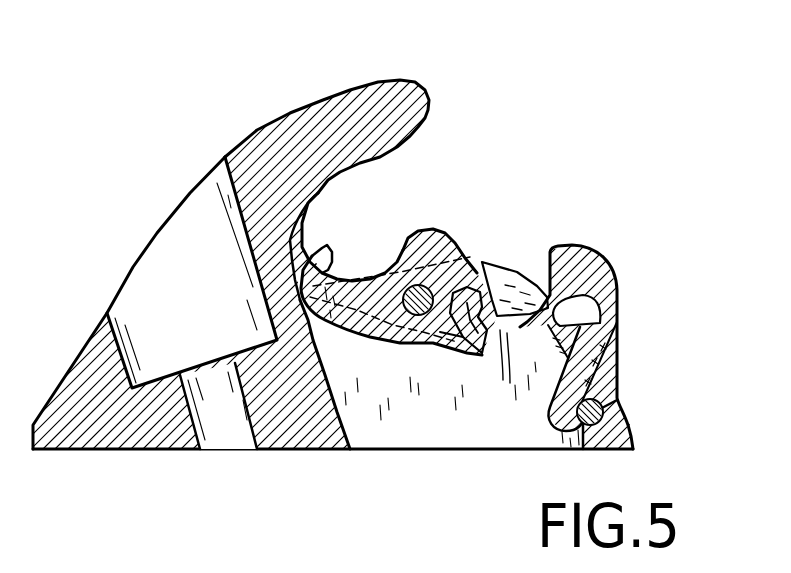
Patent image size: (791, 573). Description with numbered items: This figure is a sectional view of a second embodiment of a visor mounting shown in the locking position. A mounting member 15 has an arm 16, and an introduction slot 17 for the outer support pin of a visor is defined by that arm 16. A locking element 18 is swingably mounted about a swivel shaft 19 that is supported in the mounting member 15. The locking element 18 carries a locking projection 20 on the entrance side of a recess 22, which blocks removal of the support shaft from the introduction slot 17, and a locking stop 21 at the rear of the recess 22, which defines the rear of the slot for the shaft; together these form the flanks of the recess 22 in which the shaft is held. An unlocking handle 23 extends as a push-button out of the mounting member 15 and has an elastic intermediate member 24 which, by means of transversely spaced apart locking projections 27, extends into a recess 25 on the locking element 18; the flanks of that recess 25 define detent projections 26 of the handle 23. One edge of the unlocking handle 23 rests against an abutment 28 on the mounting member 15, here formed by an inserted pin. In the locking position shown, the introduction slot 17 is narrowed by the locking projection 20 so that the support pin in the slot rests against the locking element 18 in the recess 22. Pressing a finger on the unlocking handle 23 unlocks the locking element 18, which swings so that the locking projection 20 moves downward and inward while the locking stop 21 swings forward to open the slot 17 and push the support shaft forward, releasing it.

The mounting member 15 is at (329, 437).
The arm 16 is at (367, 107).
The introduction slot 17 is at (373, 200).
The locking element 18 is at (357, 338).
The swivel shaft 19 is at (447, 258).
The locking projection 20 is at (438, 229).
The locking stop 21 is at (300, 243).
The recess 22 is at (258, 449).
The unlocking handle 23 is at (582, 262).
The elastic intermediate member 24 is at (610, 318).
The recess 25 is at (450, 338).
The detent projections 26 is at (485, 256).
The locking projections 27 is at (506, 383).
The abutment 28 is at (620, 399).